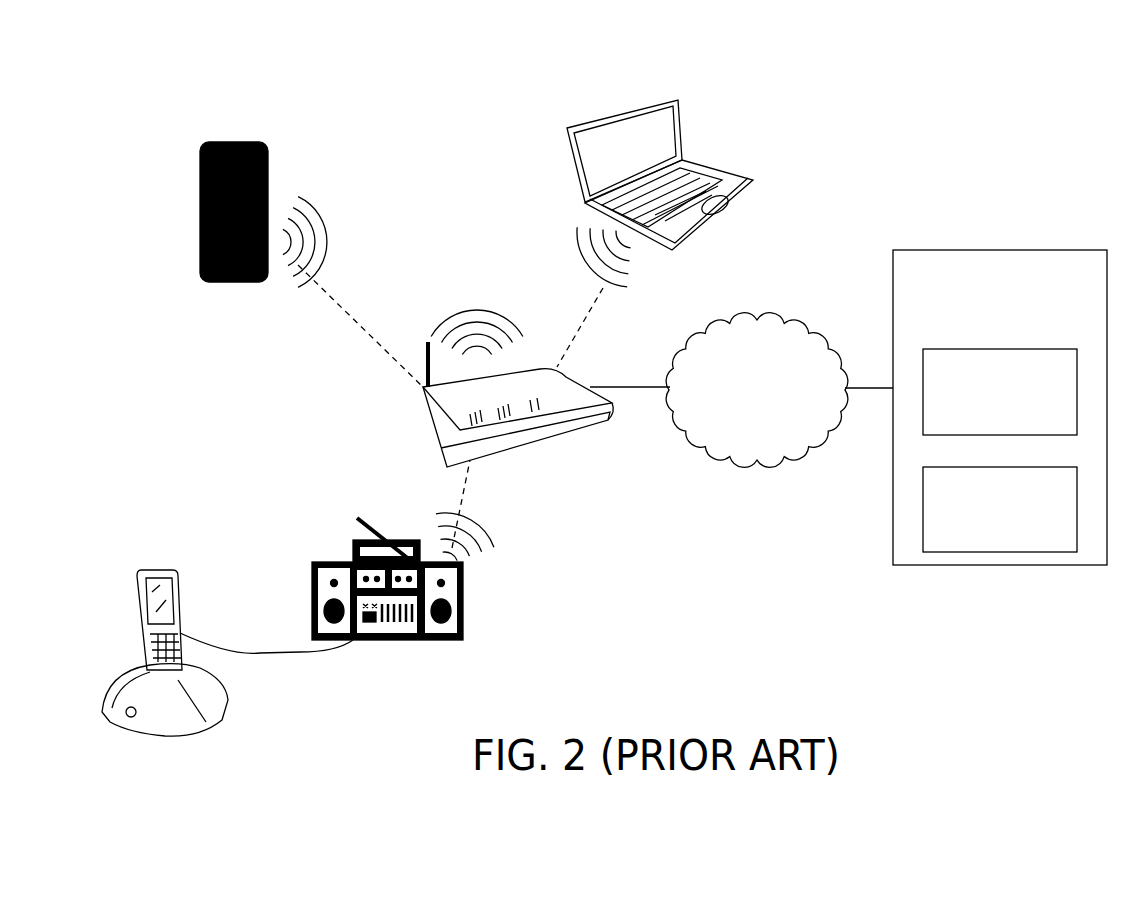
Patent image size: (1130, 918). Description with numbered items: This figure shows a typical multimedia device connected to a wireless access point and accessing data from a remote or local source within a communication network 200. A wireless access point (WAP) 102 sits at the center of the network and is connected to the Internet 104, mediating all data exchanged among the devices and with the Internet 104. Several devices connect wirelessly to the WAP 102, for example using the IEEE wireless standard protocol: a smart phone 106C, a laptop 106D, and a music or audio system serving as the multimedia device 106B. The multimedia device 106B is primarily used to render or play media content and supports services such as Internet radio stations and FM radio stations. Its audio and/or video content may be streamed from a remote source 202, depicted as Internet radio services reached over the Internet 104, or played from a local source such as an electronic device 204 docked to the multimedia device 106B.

The communication network 200 is at (852, 100).
The wireless access point (WAP) 102 is at (550, 437).
The Internet 104 is at (757, 320).
The multimedia device 106B is at (337, 565).
The smart phone 106C is at (242, 142).
The laptop 106D is at (615, 110).
The remote source 202 is at (977, 250).
The electronic device 204 is at (152, 570).